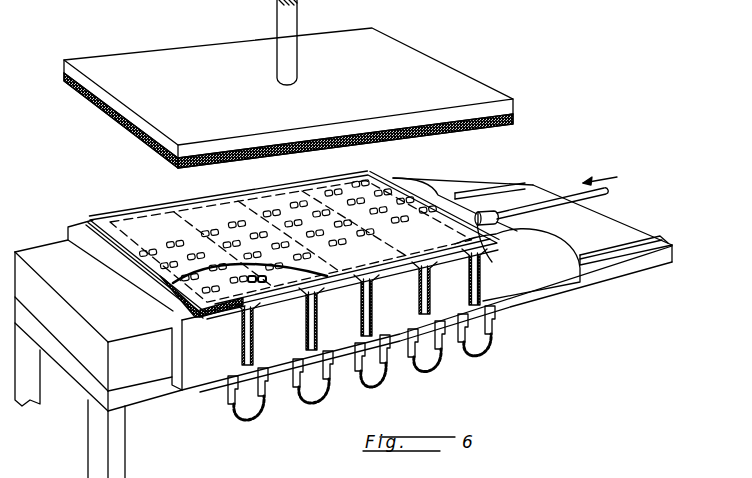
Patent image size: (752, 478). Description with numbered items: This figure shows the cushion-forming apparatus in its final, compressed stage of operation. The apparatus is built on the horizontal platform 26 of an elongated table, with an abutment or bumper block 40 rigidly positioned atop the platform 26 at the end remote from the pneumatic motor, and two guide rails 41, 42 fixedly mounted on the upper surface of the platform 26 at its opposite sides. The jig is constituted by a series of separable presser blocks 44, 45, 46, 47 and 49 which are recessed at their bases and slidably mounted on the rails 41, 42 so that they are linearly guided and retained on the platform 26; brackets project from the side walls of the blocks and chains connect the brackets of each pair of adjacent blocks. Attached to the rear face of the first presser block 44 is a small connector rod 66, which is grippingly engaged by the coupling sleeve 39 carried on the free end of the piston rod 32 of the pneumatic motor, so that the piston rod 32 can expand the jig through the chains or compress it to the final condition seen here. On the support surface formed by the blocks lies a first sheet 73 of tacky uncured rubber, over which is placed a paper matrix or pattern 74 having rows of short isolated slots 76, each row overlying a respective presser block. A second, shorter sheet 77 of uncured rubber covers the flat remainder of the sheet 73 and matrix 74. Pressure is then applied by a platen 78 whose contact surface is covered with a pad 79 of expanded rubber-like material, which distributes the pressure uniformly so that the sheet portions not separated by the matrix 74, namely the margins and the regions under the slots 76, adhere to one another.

The platen 78 is at (406, 61).
The pad 79 is at (123, 119).
The second sheet 77 is at (125, 228).
The slots 76 is at (273, 203).
The coupling sleeve 39 is at (477, 212).
The guide rail 42 is at (503, 193).
The piston rod 32 is at (549, 204).
The guide rail 41 is at (632, 243).
The abutment or bumper block 40 is at (30, 252).
The sheet 73 is at (178, 297).
The matrix or pattern 74 is at (213, 308).
The connector rod 66 is at (340, 253).
The presser block 44 is at (527, 290).
The platform 26 is at (618, 274).
The presser block 49 is at (192, 386).
The presser block 45 is at (452, 318).
The presser block 46 is at (399, 333).
The presser block 47 is at (343, 356).